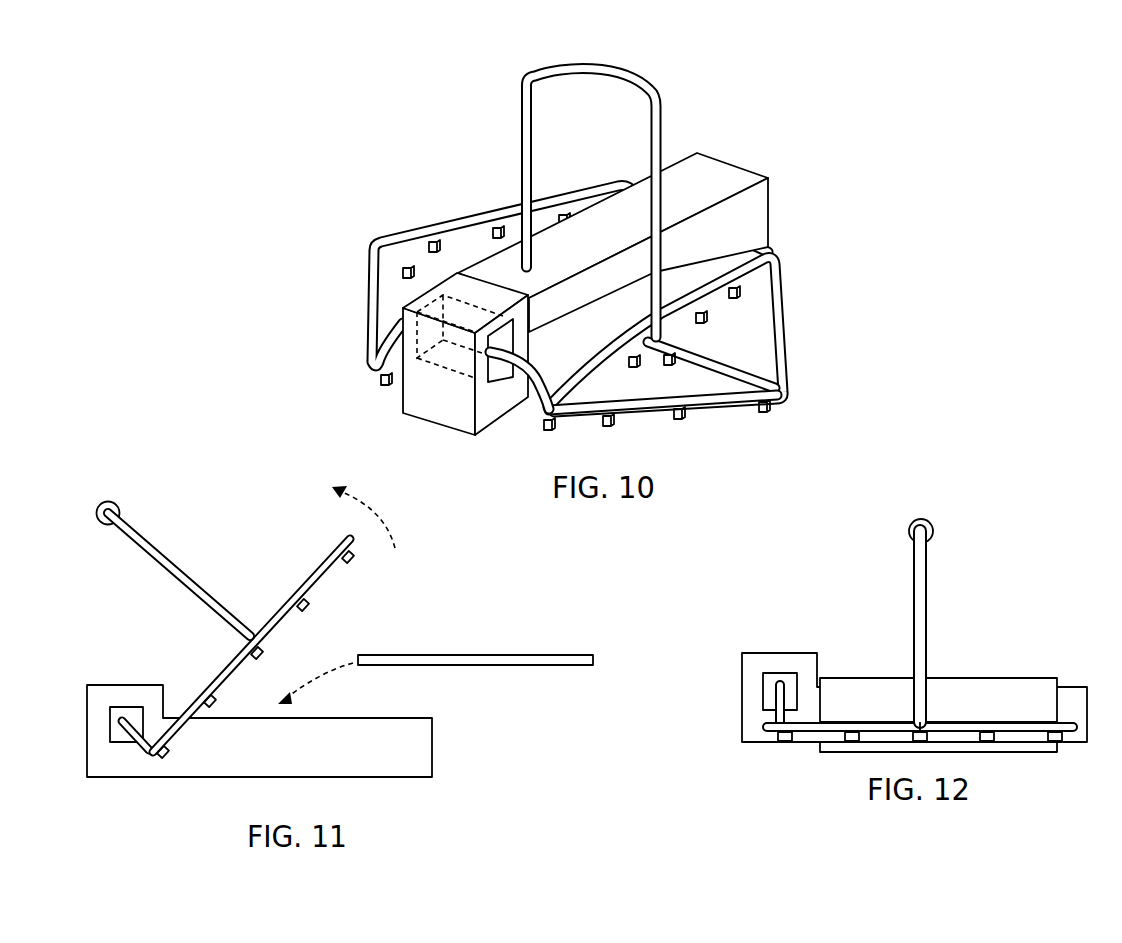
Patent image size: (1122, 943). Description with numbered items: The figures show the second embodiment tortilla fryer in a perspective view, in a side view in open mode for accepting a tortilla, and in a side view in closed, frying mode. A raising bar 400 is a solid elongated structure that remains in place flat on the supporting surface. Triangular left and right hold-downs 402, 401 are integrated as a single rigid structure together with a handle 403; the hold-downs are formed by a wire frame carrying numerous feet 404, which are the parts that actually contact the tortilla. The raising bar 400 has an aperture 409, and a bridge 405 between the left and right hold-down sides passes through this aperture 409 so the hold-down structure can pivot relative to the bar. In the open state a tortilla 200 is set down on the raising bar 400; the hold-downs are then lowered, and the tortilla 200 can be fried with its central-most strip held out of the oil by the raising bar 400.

In FIG. 11, the tortilla 200 is at (468, 653).
In FIG. 12, the tortilla 200 is at (953, 673).
In FIG. 10, the raising bar 400 is at (746, 228).
In FIG. 11, the raising bar 400 is at (436, 745).
In FIG. 12, the raising bar 400 is at (1062, 685).
In FIG. 10, the right hold-down 401 is at (778, 278).
In FIG. 11, the right hold-down 401 is at (295, 590).
In FIG. 10, the left hold-down 402 is at (465, 222).
In FIG. 10, the handle 403 is at (612, 73).
In FIG. 11, the handle 403 is at (142, 532).
In FIG. 12, the handle 403 is at (932, 528).
In FIG. 10, the feet 404 is at (777, 409).
In FIG. 10, the bridge 405 is at (520, 383).
In FIG. 11, the bridge 405 is at (123, 737).
In FIG. 11, the aperture 409 is at (108, 678).
In FIG. 12, the aperture 409 is at (775, 679).